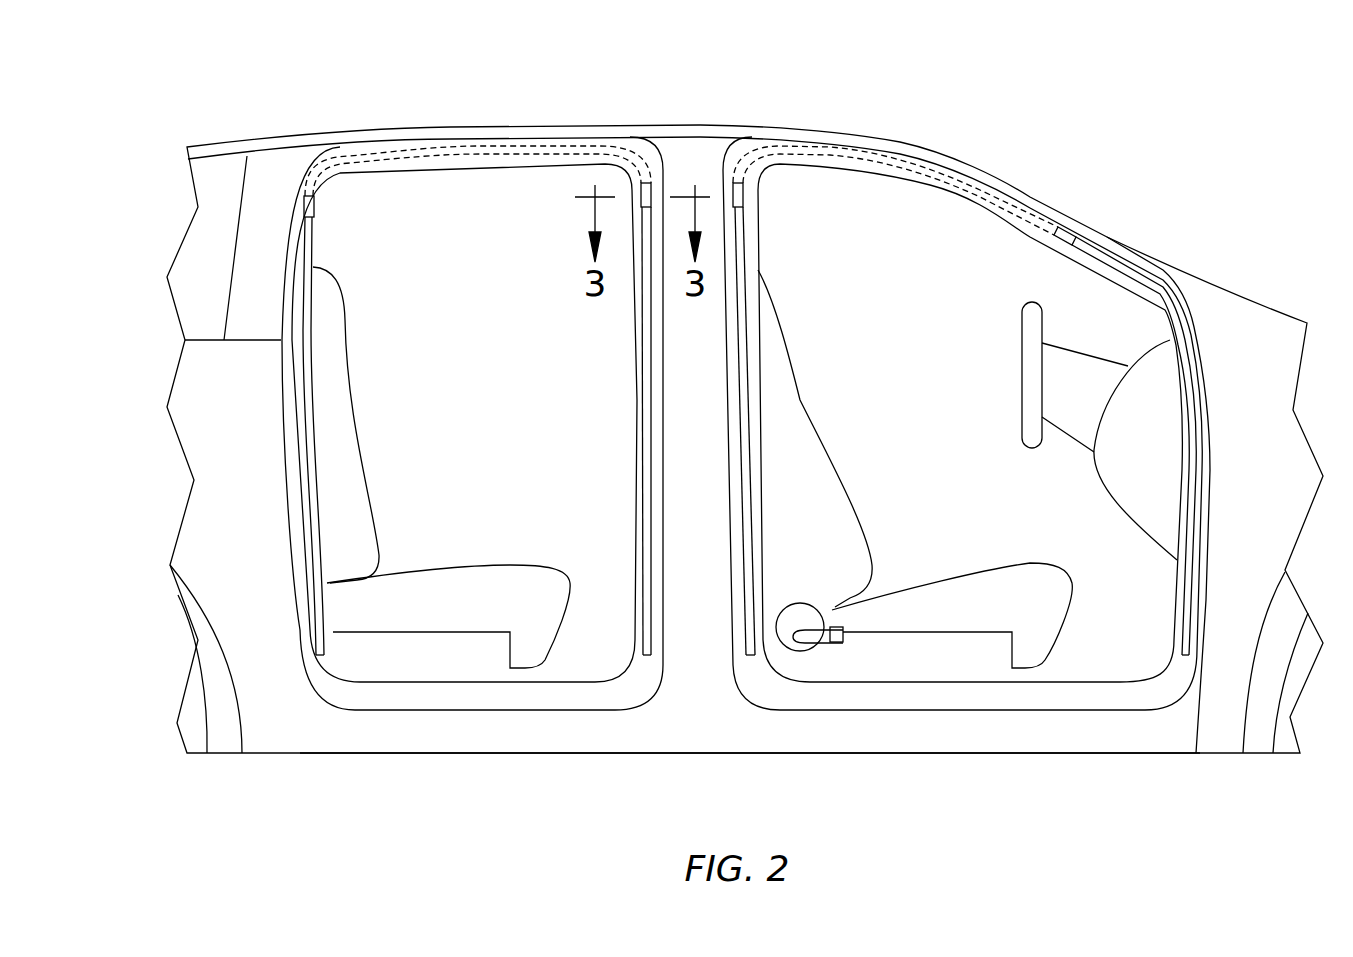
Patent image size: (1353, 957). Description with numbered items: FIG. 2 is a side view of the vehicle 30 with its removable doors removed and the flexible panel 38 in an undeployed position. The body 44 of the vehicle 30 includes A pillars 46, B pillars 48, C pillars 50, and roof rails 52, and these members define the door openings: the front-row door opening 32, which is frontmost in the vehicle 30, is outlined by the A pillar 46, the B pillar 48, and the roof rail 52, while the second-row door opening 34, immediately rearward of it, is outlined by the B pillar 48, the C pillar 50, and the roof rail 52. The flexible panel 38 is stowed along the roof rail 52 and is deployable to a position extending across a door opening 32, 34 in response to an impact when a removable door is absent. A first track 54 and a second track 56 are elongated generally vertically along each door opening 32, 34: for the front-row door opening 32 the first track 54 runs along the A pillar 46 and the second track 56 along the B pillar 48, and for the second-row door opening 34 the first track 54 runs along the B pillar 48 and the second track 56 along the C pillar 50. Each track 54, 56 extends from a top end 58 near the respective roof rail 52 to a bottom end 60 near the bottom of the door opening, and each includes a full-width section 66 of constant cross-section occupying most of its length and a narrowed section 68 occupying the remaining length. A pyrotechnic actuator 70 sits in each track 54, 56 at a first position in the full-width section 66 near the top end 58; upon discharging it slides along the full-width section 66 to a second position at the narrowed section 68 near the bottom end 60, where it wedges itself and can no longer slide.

The vehicle 30 is at (1166, 96).
The front-row door opening 32 is at (957, 708).
The second-row door opening 34 is at (487, 710).
The flexible panel 38 is at (488, 146).
The body 44 is at (1223, 762).
The A pillar 46 is at (1133, 245).
The B pillar 48 is at (757, 237).
The C pillar 50 is at (233, 220).
The roof rail 52 is at (420, 127).
The first track 54 is at (645, 427).
The second track 56 is at (303, 442).
The top end 58 is at (309, 196).
The bottom end 60 is at (320, 657).
The full-width section 66 is at (313, 288).
The narrowed section 68 is at (328, 623).
The pyrotechnic actuator 70 is at (314, 201).